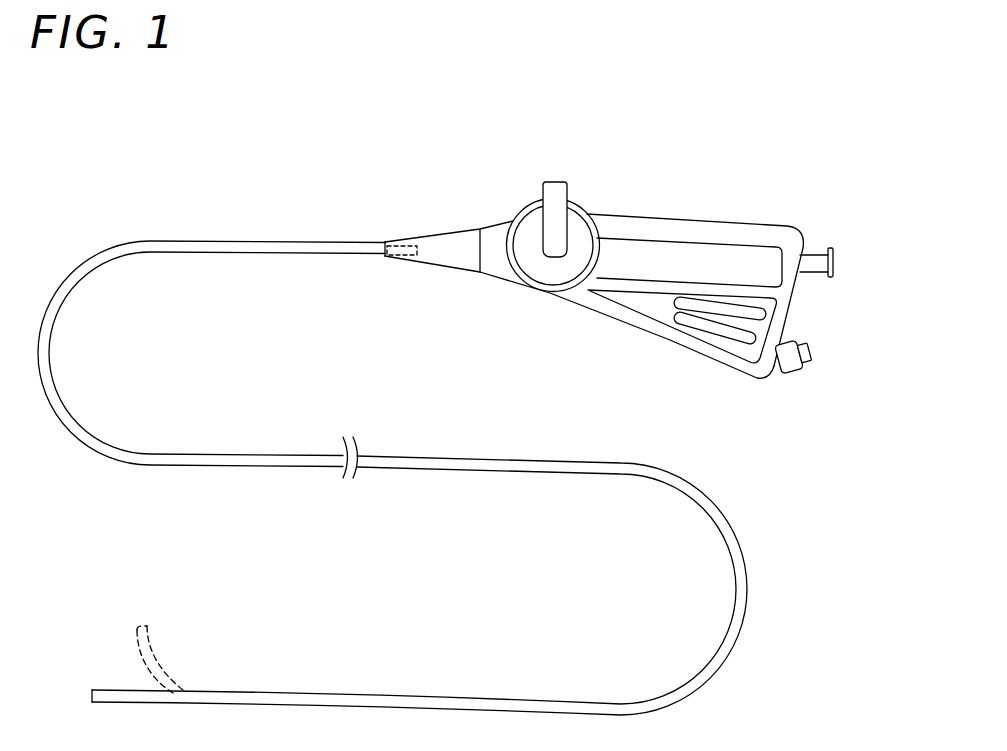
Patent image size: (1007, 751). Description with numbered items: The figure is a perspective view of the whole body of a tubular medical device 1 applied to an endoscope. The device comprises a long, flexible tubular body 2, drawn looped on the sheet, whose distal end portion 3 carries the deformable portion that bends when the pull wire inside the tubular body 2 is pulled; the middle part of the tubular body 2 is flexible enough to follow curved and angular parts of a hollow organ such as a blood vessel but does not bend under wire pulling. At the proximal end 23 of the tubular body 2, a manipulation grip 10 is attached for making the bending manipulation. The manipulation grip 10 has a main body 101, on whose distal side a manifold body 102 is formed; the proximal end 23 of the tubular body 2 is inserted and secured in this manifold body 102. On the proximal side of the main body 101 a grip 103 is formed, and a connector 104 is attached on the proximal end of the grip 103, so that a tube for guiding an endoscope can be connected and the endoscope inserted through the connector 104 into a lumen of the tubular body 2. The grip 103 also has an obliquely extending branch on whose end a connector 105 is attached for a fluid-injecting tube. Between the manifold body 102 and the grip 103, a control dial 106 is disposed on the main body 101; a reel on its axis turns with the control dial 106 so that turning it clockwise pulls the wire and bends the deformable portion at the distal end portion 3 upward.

The tubular medical device 1 is at (352, 177).
The tubular body 2 is at (573, 476).
The distal end portion 3 is at (112, 690).
The manipulation grip 10 is at (786, 185).
The proximal end 23 is at (402, 257).
The main body 101 is at (680, 223).
The manifold body 102 is at (447, 233).
The grip 103 is at (648, 302).
The connector 104 is at (806, 360).
The connector 105 is at (833, 258).
The control dial 106 is at (560, 181).